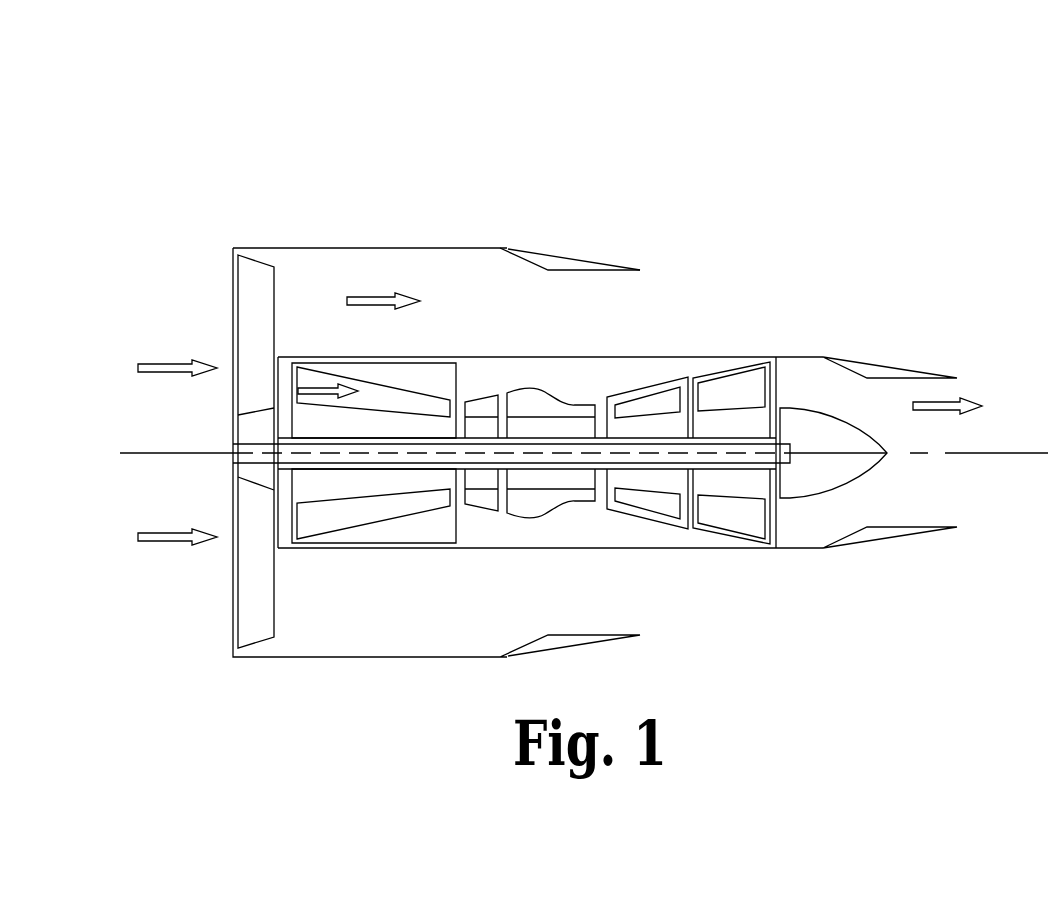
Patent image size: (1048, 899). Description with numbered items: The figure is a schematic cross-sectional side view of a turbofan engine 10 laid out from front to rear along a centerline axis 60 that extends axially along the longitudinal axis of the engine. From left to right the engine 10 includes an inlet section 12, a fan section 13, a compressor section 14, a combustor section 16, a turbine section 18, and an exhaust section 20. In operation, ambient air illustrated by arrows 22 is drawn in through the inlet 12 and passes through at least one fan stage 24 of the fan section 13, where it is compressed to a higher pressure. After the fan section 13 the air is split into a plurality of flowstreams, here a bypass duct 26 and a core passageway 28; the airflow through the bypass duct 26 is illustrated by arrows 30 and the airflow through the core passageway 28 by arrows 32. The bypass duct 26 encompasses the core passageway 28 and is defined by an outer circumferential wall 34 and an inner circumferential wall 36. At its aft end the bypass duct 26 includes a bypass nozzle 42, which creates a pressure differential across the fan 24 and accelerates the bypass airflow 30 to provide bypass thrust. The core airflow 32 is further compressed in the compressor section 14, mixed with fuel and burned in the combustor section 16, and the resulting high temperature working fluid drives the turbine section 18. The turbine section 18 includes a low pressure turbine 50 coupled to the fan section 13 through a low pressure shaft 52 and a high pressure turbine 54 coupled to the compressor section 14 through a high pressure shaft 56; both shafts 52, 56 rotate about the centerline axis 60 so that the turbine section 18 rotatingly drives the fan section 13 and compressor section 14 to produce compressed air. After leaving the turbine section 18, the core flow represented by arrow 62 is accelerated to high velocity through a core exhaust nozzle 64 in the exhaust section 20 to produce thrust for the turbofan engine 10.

The turbofan engine 10 is at (724, 231).
The inlet section 12 is at (233, 307).
The fan section 13 is at (257, 592).
The compressor section 14 is at (406, 368).
The combustor section 16 is at (538, 522).
The turbine section 18 is at (687, 356).
The exhaust section 20 is at (937, 347).
The air (arrows) 22 is at (160, 375).
The fan stage 24 is at (255, 280).
The bypass duct 26 is at (345, 272).
The core passageway 28 is at (325, 512).
The bypass airflow (arrows) 30 is at (366, 307).
The core airflow (arrows) 32 is at (312, 388).
The outer circumferential wall 34 is at (493, 248).
The inner circumferential wall 36 is at (520, 357).
The bypass nozzle 42 is at (625, 262).
The low pressure turbine 50 is at (750, 385).
The low pressure shaft 52 is at (437, 465).
The high pressure turbine 54 is at (643, 405).
The high pressure shaft 56 is at (605, 472).
The centerline axis 60 is at (1010, 453).
The core flow (arrow) 62 is at (930, 410).
The core exhaust nozzle 64 is at (893, 533).